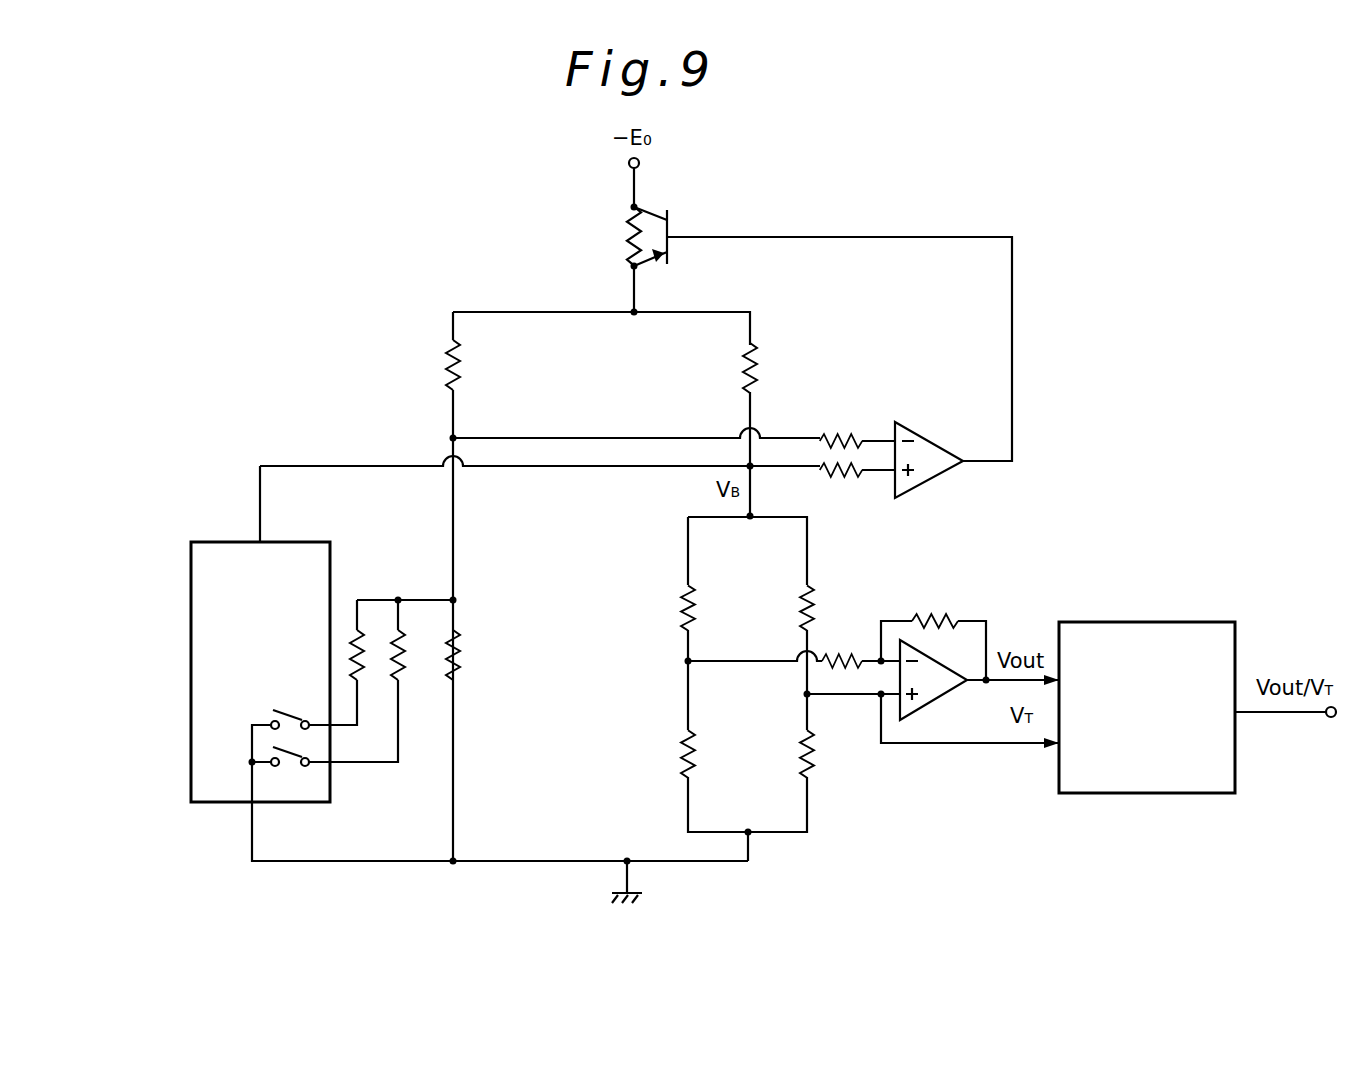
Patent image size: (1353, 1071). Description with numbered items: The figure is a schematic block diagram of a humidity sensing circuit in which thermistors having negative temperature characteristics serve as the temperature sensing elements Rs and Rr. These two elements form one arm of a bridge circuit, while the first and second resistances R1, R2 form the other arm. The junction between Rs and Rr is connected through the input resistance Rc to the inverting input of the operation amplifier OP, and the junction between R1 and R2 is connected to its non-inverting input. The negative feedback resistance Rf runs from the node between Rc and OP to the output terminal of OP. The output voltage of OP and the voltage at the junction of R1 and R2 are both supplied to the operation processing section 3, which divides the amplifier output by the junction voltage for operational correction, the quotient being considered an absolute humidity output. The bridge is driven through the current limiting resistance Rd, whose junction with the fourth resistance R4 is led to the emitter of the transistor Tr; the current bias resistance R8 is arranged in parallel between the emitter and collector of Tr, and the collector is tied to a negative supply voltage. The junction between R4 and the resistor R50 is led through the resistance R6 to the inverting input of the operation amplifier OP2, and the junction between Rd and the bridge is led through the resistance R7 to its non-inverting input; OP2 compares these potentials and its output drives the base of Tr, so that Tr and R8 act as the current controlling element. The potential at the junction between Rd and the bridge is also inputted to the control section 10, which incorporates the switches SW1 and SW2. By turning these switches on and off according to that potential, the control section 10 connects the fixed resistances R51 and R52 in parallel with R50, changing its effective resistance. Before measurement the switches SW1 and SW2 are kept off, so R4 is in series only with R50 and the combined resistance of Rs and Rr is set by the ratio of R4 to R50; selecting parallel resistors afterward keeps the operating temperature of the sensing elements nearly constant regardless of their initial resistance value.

The control section 10 is at (191, 628).
The operation processing section 3 is at (1145, 622).
The transistor Tr is at (823, 321).
The current bias resistance R8 is at (616, 236).
The fourth resistance R4 is at (436, 365).
The current limiting resistance Rd is at (767, 368).
The resistance R6 is at (841, 428).
The resistance R7 is at (841, 486).
The operation amplifier OP2 is at (929, 453).
The temperature sensing element Rs is at (672, 608).
The first resistance R1 is at (823, 608).
The temperature sensing element Rr is at (672, 754).
The second resistance R2 is at (823, 754).
The input resistance Rc is at (842, 647).
The operation amplifier OP is at (933, 679).
The negative feedback resistance Rf is at (935, 608).
The resistance R52 is at (369, 644).
The resistance R51 is at (410, 644).
The resistor R50 is at (466, 644).
The switch SW2 is at (285, 707).
The switch SW1 is at (287, 773).